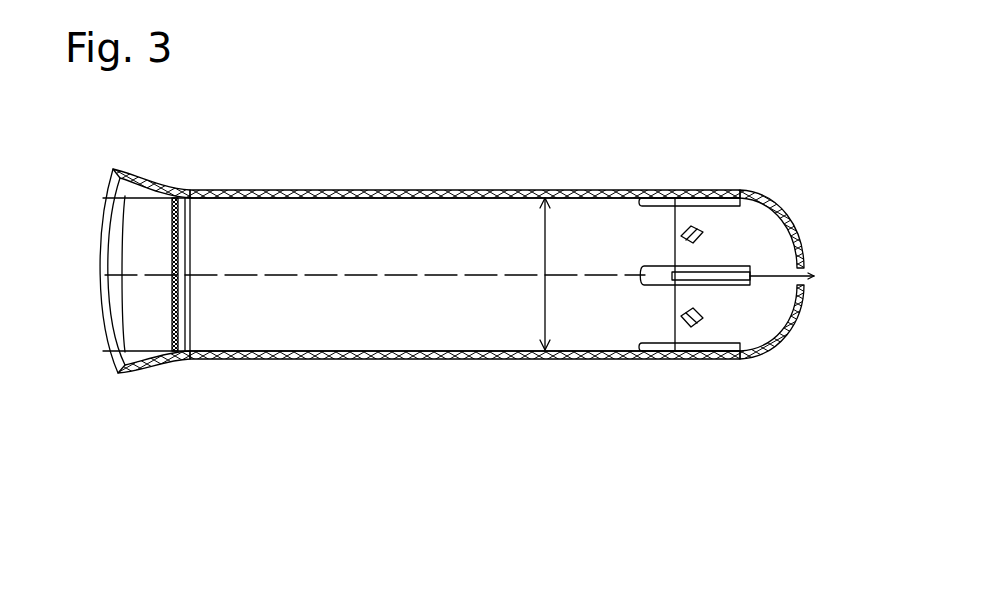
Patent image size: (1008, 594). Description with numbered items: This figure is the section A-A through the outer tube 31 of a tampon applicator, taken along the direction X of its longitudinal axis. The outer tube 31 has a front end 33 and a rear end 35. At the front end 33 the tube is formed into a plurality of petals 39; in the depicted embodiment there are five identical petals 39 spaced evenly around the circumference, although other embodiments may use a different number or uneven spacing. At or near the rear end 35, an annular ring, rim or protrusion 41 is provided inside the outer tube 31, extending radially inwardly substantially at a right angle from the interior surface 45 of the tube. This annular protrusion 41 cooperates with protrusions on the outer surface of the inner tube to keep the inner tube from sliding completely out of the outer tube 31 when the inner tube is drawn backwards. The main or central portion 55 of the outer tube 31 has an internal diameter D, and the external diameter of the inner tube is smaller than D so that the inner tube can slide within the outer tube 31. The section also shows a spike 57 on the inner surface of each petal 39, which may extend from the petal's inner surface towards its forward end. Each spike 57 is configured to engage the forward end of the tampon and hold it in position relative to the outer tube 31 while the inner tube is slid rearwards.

The outer tube 31 is at (358, 372).
The front end 33 is at (803, 301).
The rear end 35 is at (103, 342).
The petals 39 is at (762, 248).
The annular protrusion 41 is at (189, 191).
The interior surface 45 is at (258, 196).
The central portion 55 is at (410, 190).
The spike 57 is at (689, 230).
The internal diameter D is at (563, 274).
The longitudinal axis direction X is at (578, 276).